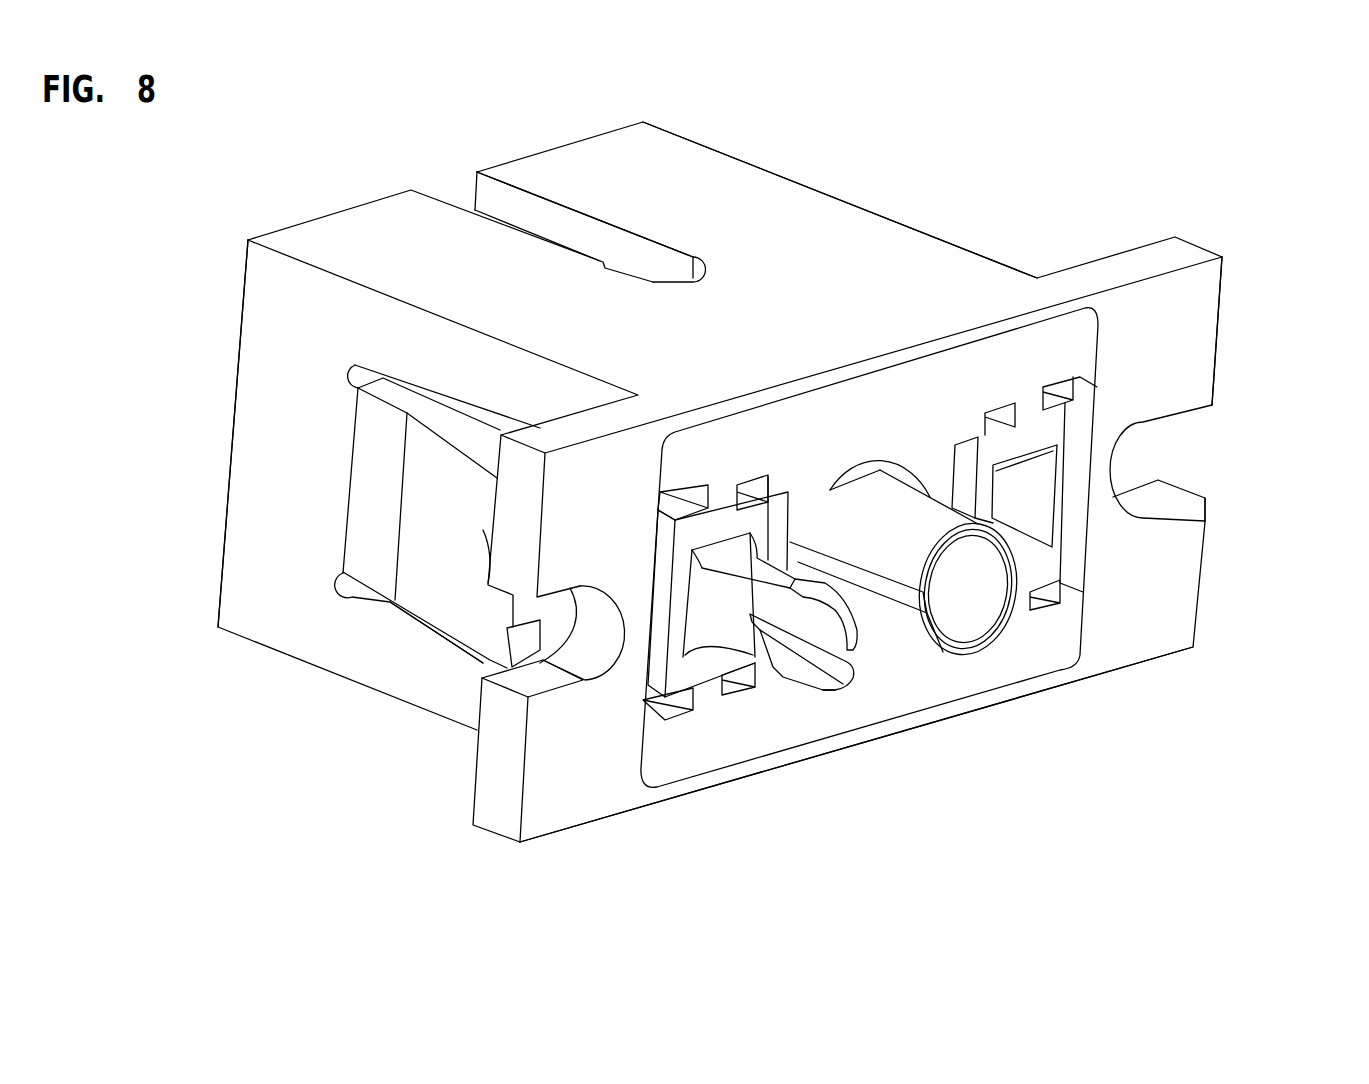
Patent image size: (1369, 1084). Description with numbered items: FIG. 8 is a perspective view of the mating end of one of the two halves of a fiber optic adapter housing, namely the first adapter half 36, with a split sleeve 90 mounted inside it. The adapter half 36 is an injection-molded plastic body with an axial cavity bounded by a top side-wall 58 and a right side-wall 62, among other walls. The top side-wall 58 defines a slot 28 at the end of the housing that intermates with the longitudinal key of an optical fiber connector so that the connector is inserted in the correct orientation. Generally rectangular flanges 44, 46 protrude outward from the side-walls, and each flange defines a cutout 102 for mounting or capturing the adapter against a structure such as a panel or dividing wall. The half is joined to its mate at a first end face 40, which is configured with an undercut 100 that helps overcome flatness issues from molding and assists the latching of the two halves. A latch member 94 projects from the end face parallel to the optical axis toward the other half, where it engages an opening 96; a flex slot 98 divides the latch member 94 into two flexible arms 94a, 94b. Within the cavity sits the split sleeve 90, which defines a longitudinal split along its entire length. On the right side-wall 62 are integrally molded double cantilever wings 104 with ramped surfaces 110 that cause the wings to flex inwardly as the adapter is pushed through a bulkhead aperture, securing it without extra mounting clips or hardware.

The slot 28 is at (460, 200).
The top side-wall 58 is at (708, 195).
The first adapter half 36 is at (944, 222).
The undercut 100 is at (1069, 340).
The flange 44 is at (1216, 338).
The cutout 102 is at (606, 618).
The opening 96 is at (1044, 528).
The flexible arm 94b is at (812, 608).
The ramped surface 110 is at (468, 552).
The right side-wall 62 is at (273, 615).
The double cantilever wings 104 is at (433, 610).
The flange 46 is at (500, 765).
The first end face 40 is at (577, 792).
The latch member 94 is at (777, 680).
The flexible arm 94a is at (825, 690).
The flex slot 98 is at (852, 663).
The split sleeve 90 is at (990, 632).